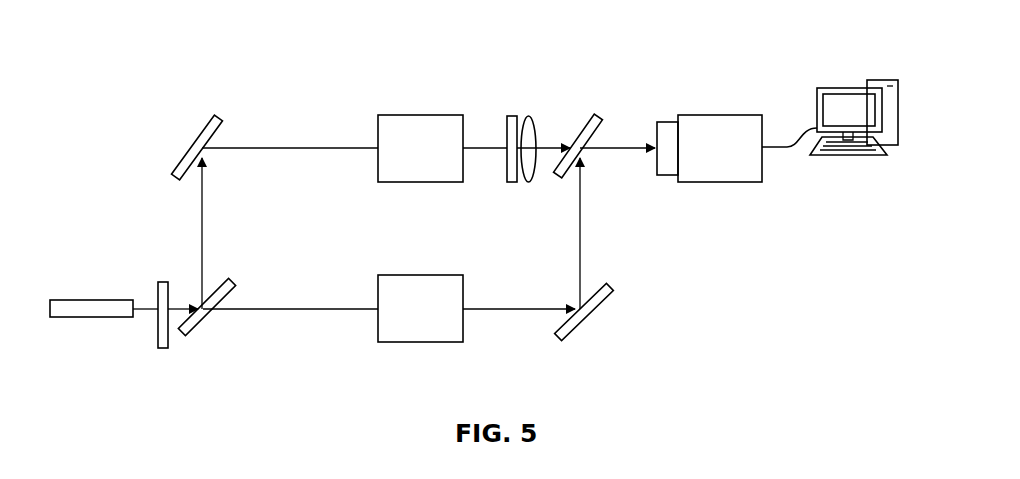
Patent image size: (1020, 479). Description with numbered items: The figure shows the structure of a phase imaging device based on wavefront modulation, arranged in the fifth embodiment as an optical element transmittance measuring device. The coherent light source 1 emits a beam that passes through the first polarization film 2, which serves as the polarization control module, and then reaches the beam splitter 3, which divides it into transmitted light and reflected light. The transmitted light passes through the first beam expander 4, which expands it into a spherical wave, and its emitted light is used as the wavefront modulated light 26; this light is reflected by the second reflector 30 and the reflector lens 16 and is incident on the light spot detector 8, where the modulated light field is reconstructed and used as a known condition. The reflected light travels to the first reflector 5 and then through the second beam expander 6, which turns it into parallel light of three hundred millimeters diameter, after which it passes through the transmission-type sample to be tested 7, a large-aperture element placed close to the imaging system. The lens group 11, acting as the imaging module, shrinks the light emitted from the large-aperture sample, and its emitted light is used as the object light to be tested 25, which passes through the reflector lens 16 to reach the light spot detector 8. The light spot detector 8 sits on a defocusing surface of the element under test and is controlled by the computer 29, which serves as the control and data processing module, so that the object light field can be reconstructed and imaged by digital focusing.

The coherent light source 1 is at (93, 317).
The first polarization film 2 is at (167, 283).
The beam splitter 3 is at (203, 323).
The first beam expander 4 is at (420, 318).
The first reflector 5 is at (212, 118).
The second beam expander 6 is at (420, 122).
The sample to be tested 7 is at (510, 116).
The light spot detector 8 is at (680, 115).
The lens group 11 is at (525, 180).
The reflector lens 16 is at (592, 117).
The object light to be tested 25 is at (540, 147).
The wavefront modulated light 26 is at (580, 193).
The computer 29 is at (840, 88).
The second reflector 30 is at (580, 320).